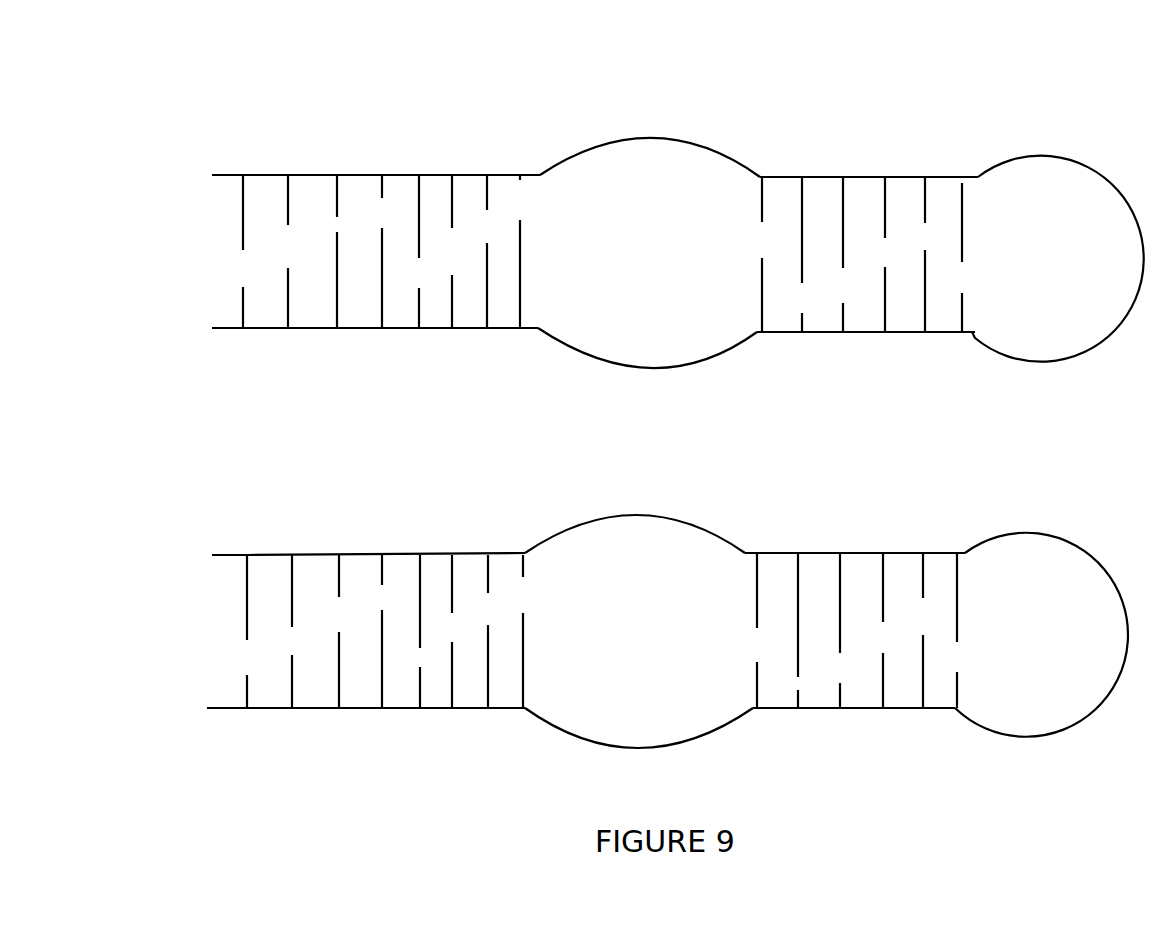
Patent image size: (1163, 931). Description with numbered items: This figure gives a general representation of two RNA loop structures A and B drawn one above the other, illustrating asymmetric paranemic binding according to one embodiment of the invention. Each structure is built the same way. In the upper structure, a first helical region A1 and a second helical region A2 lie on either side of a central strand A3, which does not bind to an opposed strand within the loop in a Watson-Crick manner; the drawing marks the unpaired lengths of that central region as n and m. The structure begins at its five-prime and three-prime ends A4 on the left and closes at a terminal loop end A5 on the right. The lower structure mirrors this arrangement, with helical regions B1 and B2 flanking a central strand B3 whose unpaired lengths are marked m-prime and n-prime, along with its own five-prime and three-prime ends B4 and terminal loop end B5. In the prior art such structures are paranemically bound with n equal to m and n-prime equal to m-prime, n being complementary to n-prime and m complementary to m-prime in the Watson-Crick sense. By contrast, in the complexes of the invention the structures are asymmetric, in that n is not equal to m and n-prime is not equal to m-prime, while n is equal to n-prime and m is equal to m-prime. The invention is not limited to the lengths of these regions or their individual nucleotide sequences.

The RNA loop structure A is at (902, 82).
The helical region A1 is at (357, 160).
The helical region A2 is at (863, 158).
The central strand A3 is at (688, 128).
The 5' and 3' ends A4 is at (172, 253).
The terminal loop end A5 is at (1080, 133).
The RNA loop structure B is at (847, 443).
The helical region B1 is at (350, 535).
The helical region B2 is at (845, 532).
The central strand B3 is at (695, 505).
The 5' and 3' ends B4 is at (208, 632).
The terminal loop end B5 is at (1075, 523).